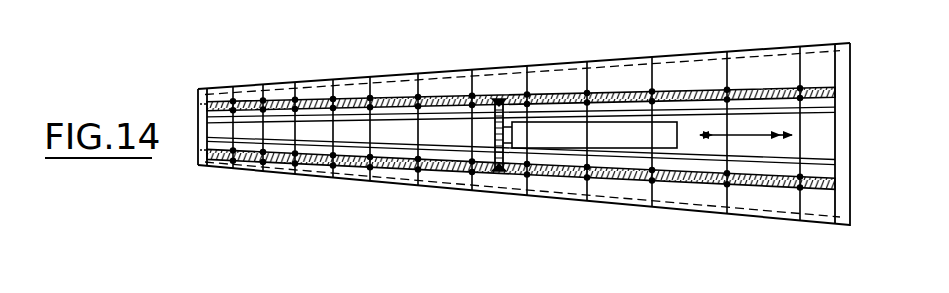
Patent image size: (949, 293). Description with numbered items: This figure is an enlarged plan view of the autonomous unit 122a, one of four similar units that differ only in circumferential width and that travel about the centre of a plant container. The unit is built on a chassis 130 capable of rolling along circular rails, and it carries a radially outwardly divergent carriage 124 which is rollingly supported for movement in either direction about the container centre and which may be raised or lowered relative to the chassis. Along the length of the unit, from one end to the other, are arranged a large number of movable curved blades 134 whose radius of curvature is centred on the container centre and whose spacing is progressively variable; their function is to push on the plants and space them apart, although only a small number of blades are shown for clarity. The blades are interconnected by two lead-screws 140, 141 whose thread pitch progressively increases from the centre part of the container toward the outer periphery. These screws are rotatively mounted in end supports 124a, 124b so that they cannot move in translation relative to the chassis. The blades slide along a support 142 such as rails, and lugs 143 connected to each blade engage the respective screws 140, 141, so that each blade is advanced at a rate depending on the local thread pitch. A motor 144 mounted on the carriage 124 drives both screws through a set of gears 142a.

The autonomous unit 122a is at (385, 192).
The carriage 124 is at (548, 203).
The end support 124a is at (847, 68).
The end support 124b is at (205, 168).
The chassis 130 is at (615, 203).
The movable curved blades 134 is at (386, 128).
The lead-screw 140 is at (698, 188).
The lead-screw 141 is at (748, 87).
The support 142 is at (687, 113).
The set of gears 142a is at (488, 136).
The lugs 143 is at (270, 96).
The motor 144 is at (610, 128).